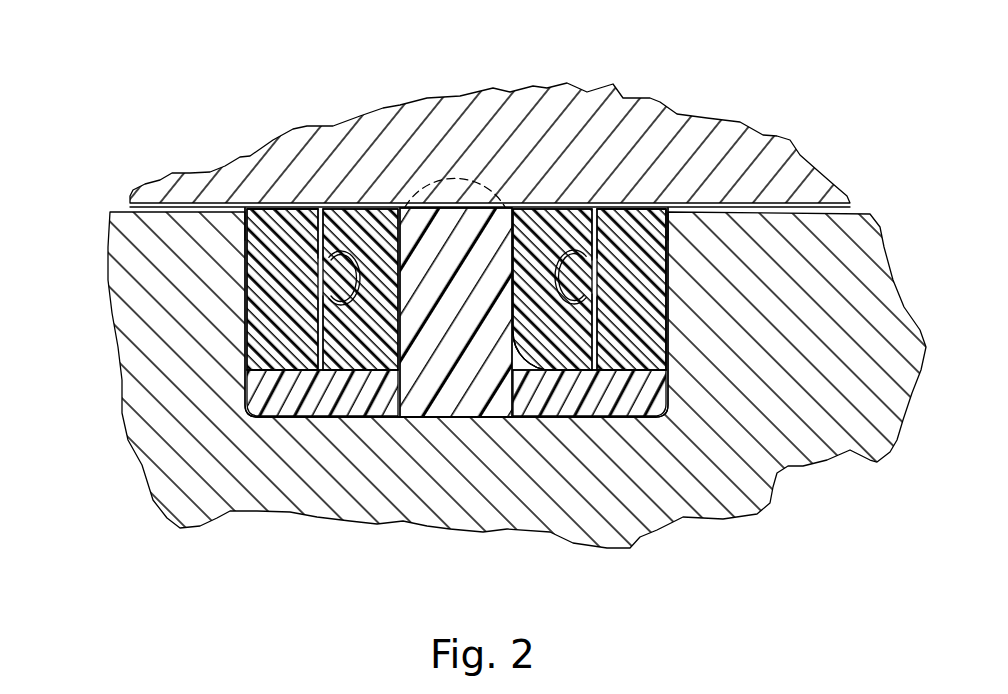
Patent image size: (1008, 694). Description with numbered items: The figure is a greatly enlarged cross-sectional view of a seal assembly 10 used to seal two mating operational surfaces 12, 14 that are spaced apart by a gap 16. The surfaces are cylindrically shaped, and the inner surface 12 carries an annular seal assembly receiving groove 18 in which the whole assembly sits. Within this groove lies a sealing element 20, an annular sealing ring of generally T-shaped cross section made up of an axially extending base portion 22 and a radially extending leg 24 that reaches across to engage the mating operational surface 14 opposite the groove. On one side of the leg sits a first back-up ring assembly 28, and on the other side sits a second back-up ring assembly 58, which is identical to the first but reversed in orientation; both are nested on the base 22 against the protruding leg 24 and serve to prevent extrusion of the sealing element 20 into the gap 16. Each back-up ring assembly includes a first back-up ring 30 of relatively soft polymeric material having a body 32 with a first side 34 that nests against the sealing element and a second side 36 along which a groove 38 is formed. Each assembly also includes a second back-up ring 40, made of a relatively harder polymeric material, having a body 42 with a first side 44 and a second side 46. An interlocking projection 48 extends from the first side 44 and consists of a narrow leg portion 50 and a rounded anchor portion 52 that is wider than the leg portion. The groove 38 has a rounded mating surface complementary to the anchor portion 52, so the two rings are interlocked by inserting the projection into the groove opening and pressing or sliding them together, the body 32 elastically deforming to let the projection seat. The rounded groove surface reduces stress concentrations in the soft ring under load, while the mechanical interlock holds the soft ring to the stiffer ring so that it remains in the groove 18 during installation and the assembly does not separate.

The seal assembly 10 is at (301, 194).
The inner mating operational surface 12 is at (858, 212).
The mating operational surface 14 is at (160, 212).
The gap 16 is at (120, 209).
The seal assembly receiving groove 18 is at (433, 418).
The sealing element 20 is at (343, 415).
The base portion 22 is at (284, 414).
The radially extending leg 24 is at (505, 212).
The first back-up ring assembly 28 is at (663, 206).
The first back-up ring 30 is at (335, 214).
The body 32 is at (401, 338).
The first side 34 is at (435, 345).
The second side 36 is at (633, 400).
The groove 38 is at (580, 222).
The second back-up ring 40 is at (243, 212).
The body 42 is at (268, 310).
The first side 44 is at (634, 191).
The second side 46 is at (675, 325).
The interlocking projection 48 is at (353, 215).
The leg portion 50 is at (560, 395).
The anchor portion 52 is at (503, 418).
The second back-up ring assembly 58 is at (264, 194).